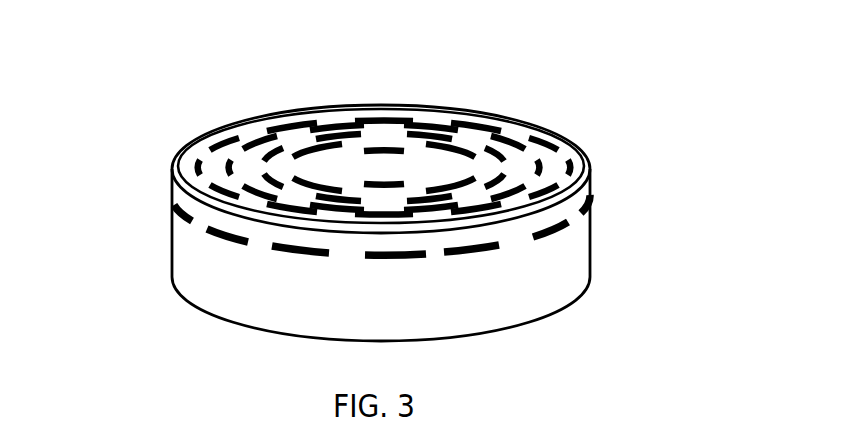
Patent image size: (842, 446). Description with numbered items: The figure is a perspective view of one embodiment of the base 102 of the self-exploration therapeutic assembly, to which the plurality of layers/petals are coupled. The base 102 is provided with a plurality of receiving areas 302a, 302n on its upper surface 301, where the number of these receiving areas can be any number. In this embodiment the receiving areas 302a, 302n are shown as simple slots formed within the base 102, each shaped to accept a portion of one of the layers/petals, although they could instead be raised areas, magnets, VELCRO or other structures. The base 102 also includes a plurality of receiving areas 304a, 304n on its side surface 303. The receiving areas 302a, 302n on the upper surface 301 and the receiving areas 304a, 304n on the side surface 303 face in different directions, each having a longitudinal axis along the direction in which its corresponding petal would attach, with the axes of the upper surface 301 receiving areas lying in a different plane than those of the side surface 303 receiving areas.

The base 102 is at (568, 260).
The upper surface 301 is at (438, 102).
The receiving area 302a is at (558, 142).
The receiving area 302n is at (268, 135).
The side surface 303 is at (246, 301).
The receiving area 304a is at (213, 230).
The receiving area 304n is at (173, 207).